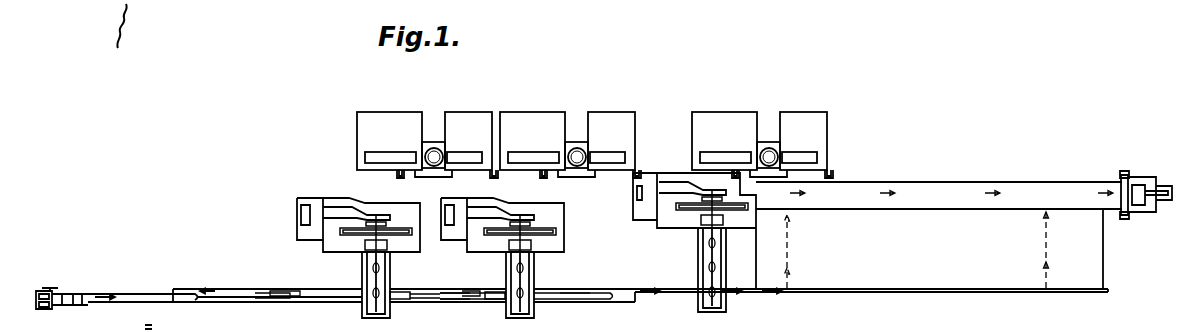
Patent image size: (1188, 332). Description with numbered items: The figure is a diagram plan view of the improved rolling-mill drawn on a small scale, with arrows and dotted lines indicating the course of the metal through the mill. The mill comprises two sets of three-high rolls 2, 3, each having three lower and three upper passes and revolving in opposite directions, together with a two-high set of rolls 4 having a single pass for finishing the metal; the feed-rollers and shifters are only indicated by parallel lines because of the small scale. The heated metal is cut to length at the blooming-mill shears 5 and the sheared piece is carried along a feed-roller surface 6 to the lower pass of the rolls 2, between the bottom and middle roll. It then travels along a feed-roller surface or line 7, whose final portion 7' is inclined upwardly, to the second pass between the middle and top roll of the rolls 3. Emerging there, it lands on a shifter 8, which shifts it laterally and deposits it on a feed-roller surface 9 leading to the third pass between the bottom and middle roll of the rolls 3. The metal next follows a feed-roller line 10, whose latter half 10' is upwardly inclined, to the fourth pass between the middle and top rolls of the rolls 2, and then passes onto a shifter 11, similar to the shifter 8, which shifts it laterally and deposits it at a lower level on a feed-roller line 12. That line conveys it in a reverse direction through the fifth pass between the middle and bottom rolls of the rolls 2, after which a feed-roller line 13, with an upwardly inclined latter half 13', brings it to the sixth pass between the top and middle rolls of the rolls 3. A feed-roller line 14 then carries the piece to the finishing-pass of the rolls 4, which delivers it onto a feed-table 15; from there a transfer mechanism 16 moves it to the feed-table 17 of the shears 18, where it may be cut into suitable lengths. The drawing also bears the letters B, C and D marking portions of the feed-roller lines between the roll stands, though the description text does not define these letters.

The three-high rolls 2 is at (358, 264).
The three-high rolls 3 is at (502, 264).
The two-high set of rolls 4 is at (694, 251).
The blooming-mill shears 5 is at (62, 307).
The feed-roller surface 6 is at (230, 304).
The feed-roller surface or line 7 is at (448, 308).
The inclined final portion of feed-roller line 7' is at (473, 310).
The shifter 8 is at (586, 303).
The feed-roller surface 9 is at (617, 303).
The feed-roller line 10 is at (494, 309).
The upwardly inclined latter half of feed-roller line 10' is at (420, 309).
The shifter 11 is at (332, 302).
The feed-roller line 12 is at (290, 283).
The feed-roller line 13 is at (425, 283).
The upwardly inclined latter half of feed-roller line 13' is at (477, 282).
The feed-roller line 14 is at (627, 290).
The feed-table 15 is at (811, 292).
The transfer mechanism 16 is at (871, 280).
The feed-table of shears 17 is at (939, 235).
The shears 18 is at (1146, 185).
The pipe portion B is at (272, 307).
The pipe portion C is at (455, 285).
The pipe portion D is at (575, 282).